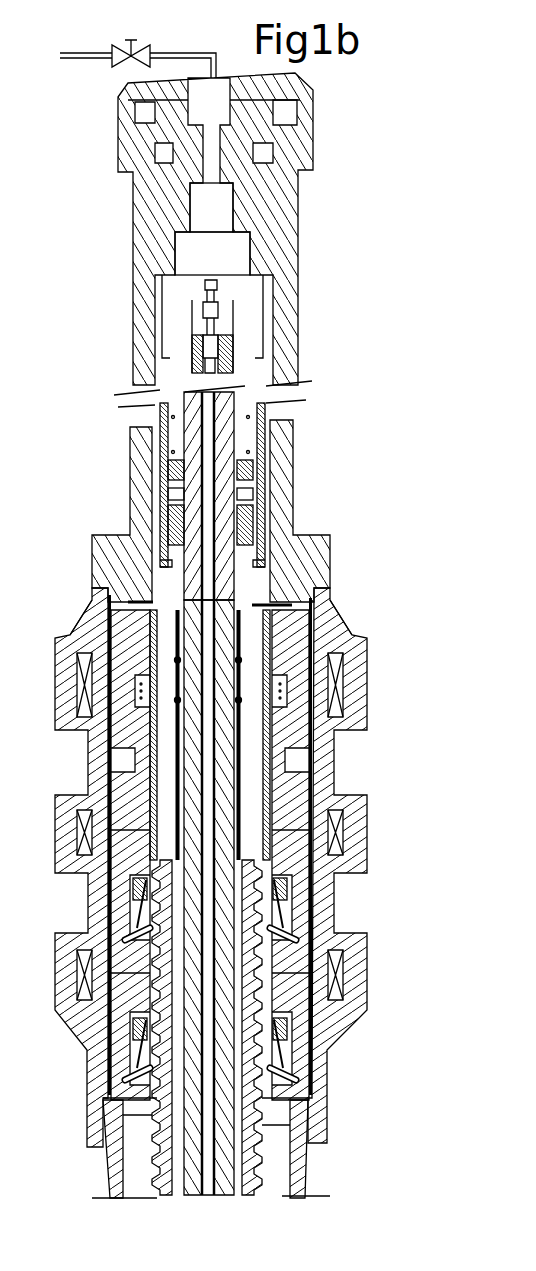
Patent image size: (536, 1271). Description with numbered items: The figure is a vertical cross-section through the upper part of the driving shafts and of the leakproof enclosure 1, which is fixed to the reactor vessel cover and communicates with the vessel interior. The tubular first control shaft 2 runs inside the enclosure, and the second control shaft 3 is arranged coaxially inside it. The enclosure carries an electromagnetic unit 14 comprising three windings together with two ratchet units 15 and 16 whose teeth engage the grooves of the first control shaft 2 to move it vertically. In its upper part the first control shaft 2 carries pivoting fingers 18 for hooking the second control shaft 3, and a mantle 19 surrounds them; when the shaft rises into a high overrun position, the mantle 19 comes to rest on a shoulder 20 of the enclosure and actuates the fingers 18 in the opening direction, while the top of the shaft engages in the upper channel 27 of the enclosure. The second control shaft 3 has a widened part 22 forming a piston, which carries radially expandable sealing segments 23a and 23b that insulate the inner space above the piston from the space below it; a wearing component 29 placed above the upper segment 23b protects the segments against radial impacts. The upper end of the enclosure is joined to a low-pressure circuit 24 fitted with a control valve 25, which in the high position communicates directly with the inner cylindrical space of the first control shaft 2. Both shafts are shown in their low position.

The leakproof enclosure 1 is at (305, 1178).
The first control shaft 2 is at (260, 1165).
The second control shaft 3 is at (220, 1153).
The electromagnetic unit 14 is at (343, 795).
The ratchet unit 15 is at (292, 915).
The ratchet unit 16 is at (290, 1045).
The pivoting fingers 18 is at (247, 512).
The mantle 19 is at (262, 414).
The shoulder 20 is at (252, 273).
The widened part 22 is at (180, 657).
The sealing segment 23a is at (107, 742).
The upper sealing segment 23b is at (90, 604).
The low-pressure circuit 24 is at (178, 51).
The control valve 25 is at (119, 45).
The upper channel 27 is at (233, 213).
The wearing component 29 is at (313, 603).